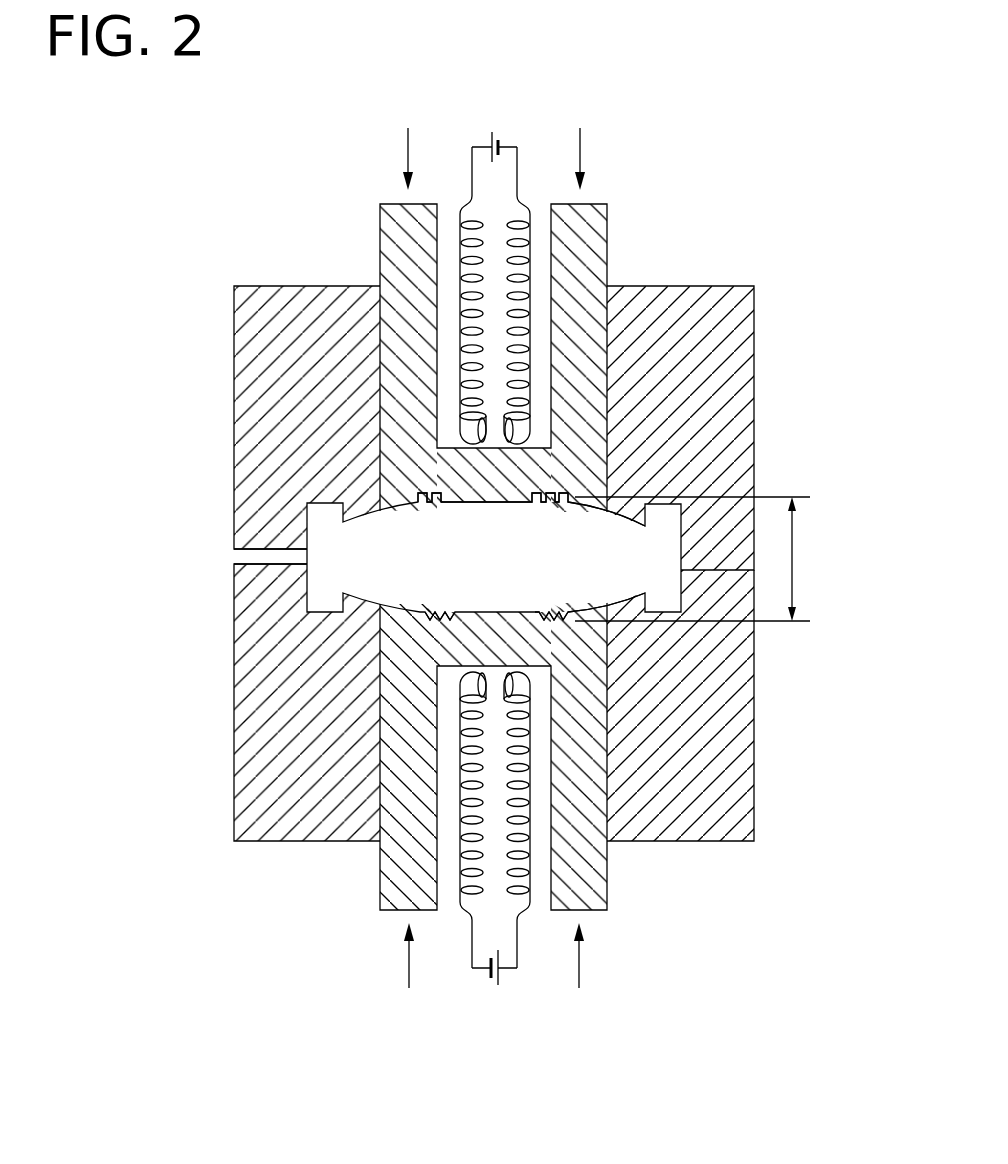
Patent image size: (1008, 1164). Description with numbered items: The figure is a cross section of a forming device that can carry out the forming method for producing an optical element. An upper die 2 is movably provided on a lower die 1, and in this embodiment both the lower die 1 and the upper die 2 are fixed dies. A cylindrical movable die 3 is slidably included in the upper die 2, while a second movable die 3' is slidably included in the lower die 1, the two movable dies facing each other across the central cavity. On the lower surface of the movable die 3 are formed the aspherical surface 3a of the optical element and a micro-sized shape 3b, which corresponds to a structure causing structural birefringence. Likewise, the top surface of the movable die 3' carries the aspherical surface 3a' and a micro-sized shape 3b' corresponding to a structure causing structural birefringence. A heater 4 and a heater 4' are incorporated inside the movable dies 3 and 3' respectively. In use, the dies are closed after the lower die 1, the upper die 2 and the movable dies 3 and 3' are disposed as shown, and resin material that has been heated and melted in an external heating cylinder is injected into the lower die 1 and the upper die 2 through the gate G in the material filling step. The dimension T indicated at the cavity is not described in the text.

The lower die 1 is at (740, 729).
The upper die 2 is at (738, 335).
The movable die 3 is at (501, 320).
The movable die 3' is at (525, 756).
The aspherical surface 3a is at (543, 519).
The micro-sized shape 3b is at (436, 520).
The aspherical surface 3a' is at (570, 594).
The micro-sized shape 3b' is at (432, 594).
The heater 4 is at (487, 261).
The heater 4' is at (498, 855).
The gate G is at (243, 555).
The lens thickness T is at (700, 559).